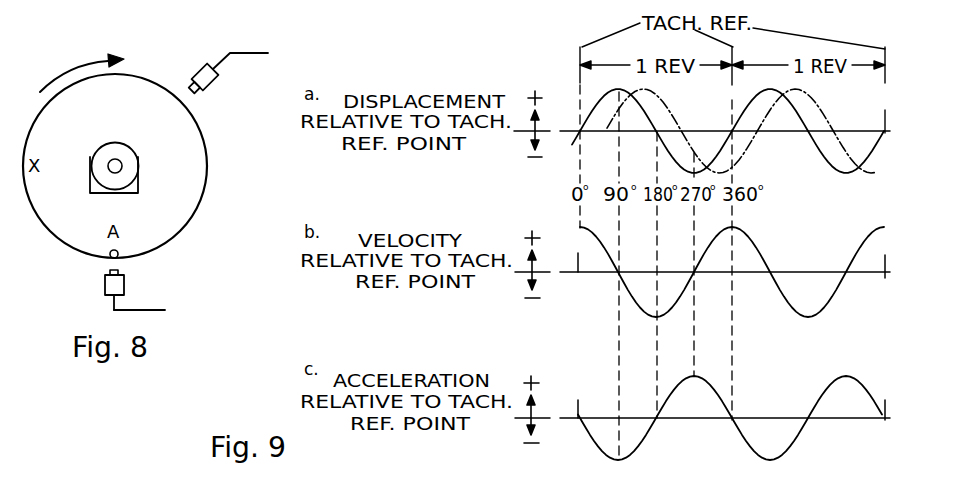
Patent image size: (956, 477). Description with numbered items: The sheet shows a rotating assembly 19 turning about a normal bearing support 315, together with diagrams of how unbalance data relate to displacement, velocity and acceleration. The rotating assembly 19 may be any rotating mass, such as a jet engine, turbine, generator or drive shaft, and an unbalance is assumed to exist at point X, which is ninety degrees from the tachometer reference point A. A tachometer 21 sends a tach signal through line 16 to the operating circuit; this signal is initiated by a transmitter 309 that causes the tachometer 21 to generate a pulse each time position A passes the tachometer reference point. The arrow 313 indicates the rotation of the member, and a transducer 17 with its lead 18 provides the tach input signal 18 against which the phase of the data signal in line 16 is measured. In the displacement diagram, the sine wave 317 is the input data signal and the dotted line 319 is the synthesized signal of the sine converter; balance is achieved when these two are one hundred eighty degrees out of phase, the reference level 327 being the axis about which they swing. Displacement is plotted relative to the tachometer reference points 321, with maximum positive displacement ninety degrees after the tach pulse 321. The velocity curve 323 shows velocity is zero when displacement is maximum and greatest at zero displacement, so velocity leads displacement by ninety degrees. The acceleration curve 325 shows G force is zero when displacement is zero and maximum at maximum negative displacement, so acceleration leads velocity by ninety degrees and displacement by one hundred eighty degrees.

In FIG. 8, the line 16 is at (150, 309).
In FIG. 8, the tachometer sensor 17 is at (197, 68).
In FIG. 8, the tach input signal 18 is at (255, 52).
In FIG. 8, the rotating assembly 19 is at (203, 132).
In FIG. 8, the tachometer 21 is at (125, 283).
In FIG. 8, the transmitter 309 is at (105, 255).
In FIG. 8, the direction of rotation 313 is at (76, 69).
In FIG. 8, the bearing support 315 is at (138, 165).
In FIG. 9, the sine wave 317 is at (592, 105).
In FIG. 9, the dotted line 319 is at (757, 140).
In FIG. 9, the tachometer reference points 321 is at (579, 117).
In FIG. 9, the velocity curve 323 is at (580, 231).
In FIG. 9, the acceleration curve 325 is at (578, 433).
In FIG. 9, the displacement waveform reference 327 is at (862, 120).